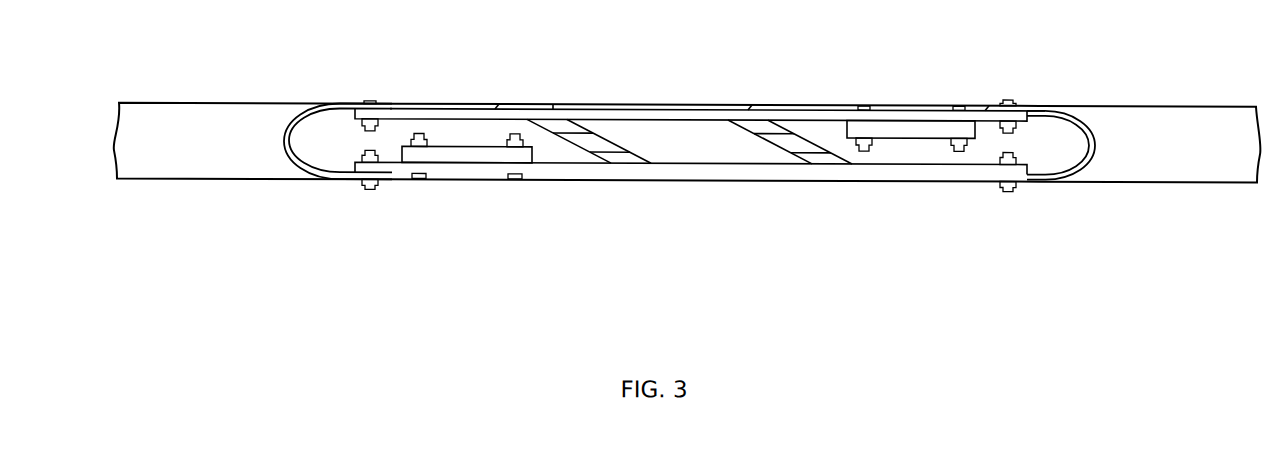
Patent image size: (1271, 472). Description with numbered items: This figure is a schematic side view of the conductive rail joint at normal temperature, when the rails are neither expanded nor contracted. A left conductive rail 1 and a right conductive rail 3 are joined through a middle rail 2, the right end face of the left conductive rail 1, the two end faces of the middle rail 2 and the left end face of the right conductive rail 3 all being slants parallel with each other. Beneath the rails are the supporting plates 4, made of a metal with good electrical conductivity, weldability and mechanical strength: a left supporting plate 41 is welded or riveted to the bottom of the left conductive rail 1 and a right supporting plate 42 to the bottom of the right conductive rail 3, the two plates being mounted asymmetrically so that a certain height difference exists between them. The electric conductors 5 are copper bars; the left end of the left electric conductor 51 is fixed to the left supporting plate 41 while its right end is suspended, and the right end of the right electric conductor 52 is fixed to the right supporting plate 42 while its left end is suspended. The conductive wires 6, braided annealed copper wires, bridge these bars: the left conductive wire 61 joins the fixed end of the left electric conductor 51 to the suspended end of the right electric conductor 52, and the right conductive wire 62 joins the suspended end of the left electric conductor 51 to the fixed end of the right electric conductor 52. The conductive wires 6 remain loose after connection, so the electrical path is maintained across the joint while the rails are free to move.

The left conductive rail 1 is at (223, 124).
The middle rail 2 is at (640, 131).
The right conductive rail 3 is at (1115, 123).
The supporting plates 4 is at (445, 198).
The left supporting plate 41 is at (473, 150).
The right supporting plate 42 is at (898, 127).
The electric conductors 5 is at (691, 208).
The left electric conductor 51 is at (720, 166).
The right electric conductor 52 is at (447, 113).
The conductive wires 6 is at (291, 185).
The left conductive wire 61 is at (297, 159).
The right conductive wire 62 is at (1067, 171).